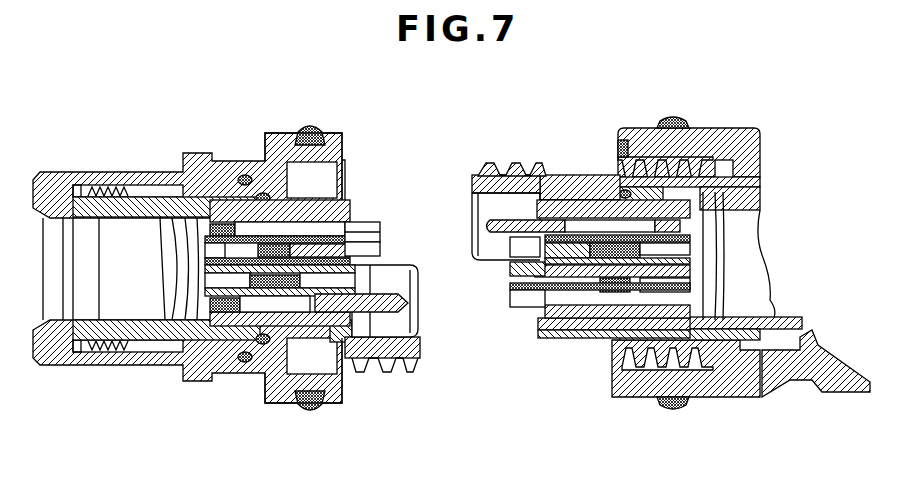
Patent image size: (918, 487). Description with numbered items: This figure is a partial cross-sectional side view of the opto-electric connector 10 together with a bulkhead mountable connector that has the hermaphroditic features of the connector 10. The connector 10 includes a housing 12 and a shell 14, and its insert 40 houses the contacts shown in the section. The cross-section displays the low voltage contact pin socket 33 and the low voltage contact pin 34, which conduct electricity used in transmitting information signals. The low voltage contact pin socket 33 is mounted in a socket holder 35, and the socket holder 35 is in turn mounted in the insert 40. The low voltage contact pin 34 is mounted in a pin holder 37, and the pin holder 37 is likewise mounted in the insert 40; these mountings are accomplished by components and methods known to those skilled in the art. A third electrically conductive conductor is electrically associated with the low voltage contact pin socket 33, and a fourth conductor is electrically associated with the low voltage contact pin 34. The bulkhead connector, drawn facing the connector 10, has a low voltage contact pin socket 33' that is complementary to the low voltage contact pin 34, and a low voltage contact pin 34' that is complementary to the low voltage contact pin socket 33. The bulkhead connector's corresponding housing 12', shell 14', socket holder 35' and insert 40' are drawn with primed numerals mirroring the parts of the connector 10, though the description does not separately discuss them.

The opto-electric connector 10 is at (815, 338).
The housing 12 is at (581, 217).
The shell 14 is at (707, 234).
The low voltage contact pin socket 33 is at (500, 304).
The low voltage contact pin 34 is at (551, 238).
The socket holder 35 is at (668, 263).
The pin holder 37 is at (687, 252).
The insert 40 is at (481, 195).
The plug housing 12' is at (226, 293).
The plug coupling nut 14' is at (275, 250).
The low voltage contact pin socket 33' is at (373, 212).
The low voltage contact pin 34' is at (383, 291).
The plug insulator assembly 35' is at (230, 263).
The plug front face 40' is at (356, 147).